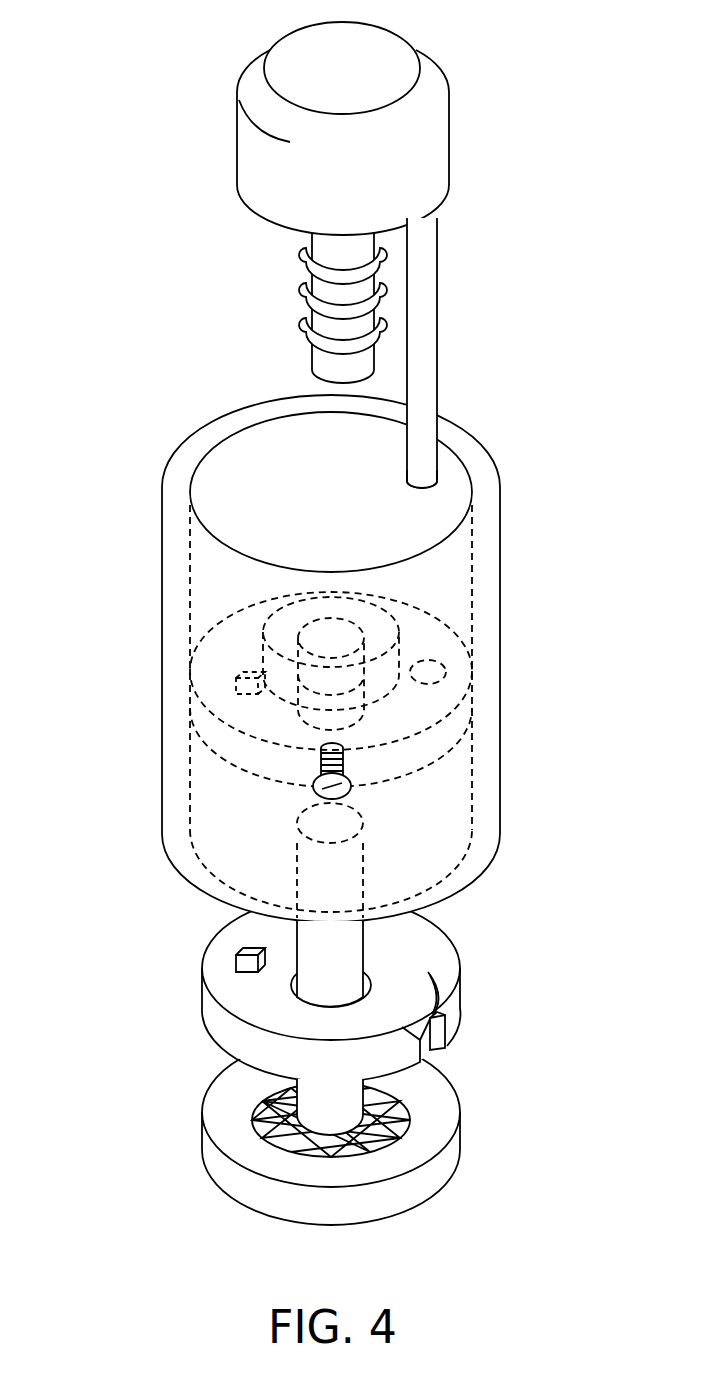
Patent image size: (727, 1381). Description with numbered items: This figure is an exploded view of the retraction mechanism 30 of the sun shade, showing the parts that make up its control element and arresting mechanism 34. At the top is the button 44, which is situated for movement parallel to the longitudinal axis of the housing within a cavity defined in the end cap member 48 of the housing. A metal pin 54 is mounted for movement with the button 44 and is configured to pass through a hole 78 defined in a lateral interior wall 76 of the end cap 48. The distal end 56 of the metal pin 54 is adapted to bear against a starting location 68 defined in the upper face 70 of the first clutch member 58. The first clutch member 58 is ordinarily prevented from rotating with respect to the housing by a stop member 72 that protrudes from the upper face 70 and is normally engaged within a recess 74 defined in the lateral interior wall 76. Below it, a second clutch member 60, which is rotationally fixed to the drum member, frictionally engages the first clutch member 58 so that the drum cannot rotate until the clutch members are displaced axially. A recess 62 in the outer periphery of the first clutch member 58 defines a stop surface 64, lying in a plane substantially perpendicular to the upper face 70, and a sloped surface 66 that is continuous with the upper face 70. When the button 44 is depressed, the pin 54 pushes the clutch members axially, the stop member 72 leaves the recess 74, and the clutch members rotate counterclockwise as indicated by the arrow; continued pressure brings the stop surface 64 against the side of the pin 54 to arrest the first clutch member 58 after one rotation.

The retraction mechanism 30 is at (95, 576).
The arresting mechanism 34 is at (480, 884).
The button 44 is at (438, 114).
The end cap member 48 is at (500, 540).
The metal pin 54 is at (438, 321).
The distal end 56 is at (407, 488).
The first clutch member 58 is at (203, 1003).
The second clutch member 60 is at (202, 1147).
The recess 62 is at (503, 1057).
The stop surface 64 is at (448, 1053).
The sloped surface 66 is at (452, 986).
The starting location 68 is at (381, 1045).
The upper face 70 is at (268, 1013).
The stop member 72 is at (224, 697).
The recess 74 is at (234, 684).
The lateral interior wall 76 is at (425, 714).
The hole 78 is at (447, 672).